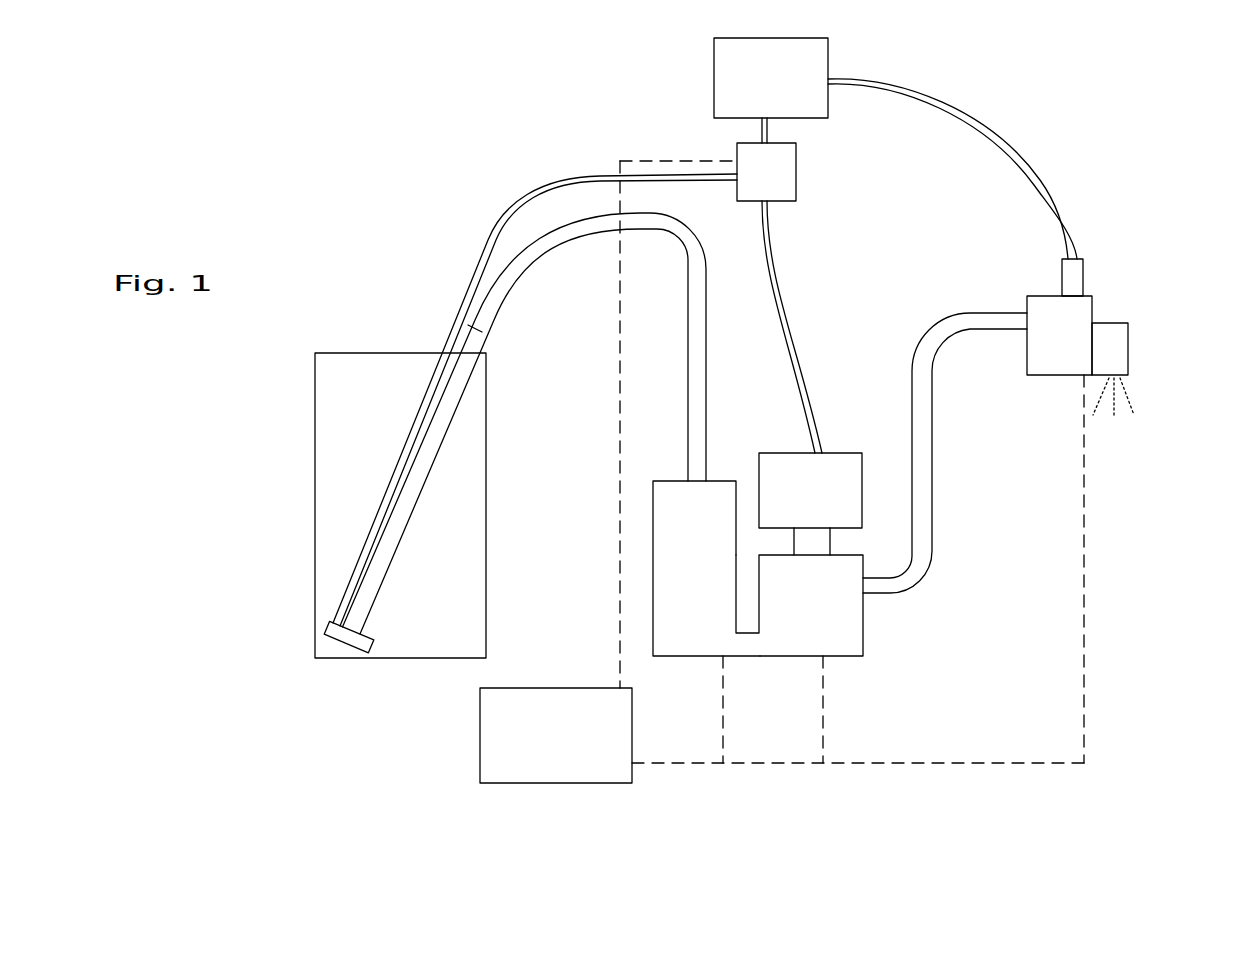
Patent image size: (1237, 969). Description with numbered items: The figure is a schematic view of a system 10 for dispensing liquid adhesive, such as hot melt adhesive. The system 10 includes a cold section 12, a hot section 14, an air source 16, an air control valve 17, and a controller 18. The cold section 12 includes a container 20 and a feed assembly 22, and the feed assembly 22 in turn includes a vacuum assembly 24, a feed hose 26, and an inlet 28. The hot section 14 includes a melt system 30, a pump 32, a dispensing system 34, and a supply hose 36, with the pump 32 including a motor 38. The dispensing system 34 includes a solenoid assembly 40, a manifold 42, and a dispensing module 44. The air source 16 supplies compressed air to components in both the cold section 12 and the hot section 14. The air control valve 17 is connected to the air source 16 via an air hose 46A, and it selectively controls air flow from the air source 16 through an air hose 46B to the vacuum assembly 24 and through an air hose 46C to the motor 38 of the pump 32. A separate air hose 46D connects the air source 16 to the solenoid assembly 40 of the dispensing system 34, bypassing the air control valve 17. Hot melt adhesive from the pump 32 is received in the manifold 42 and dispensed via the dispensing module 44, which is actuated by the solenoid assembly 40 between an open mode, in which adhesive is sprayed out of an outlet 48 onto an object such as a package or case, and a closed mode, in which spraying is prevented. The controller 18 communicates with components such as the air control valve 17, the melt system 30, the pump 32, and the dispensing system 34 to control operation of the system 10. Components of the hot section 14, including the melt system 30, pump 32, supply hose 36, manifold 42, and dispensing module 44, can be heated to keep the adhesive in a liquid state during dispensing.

The system 10 is at (358, 147).
The cold section 12 is at (377, 302).
The hot section 14 is at (845, 320).
The air source 16 is at (714, 81).
The air control valve 17 is at (737, 152).
The controller 18 is at (583, 688).
The container 20 is at (315, 508).
The feed assembly 22 is at (508, 260).
The vacuum assembly 24 is at (378, 647).
The feed hose 26 is at (587, 238).
The inlet 28 is at (337, 653).
The melt system 30 is at (682, 657).
The pump 32 is at (840, 662).
The dispensing system 34 is at (1045, 296).
The supply hose 36 is at (932, 462).
The motor 38 is at (797, 453).
The solenoid assembly 40 is at (1083, 276).
The manifold 42 is at (1040, 377).
The dispensing module 44 is at (1130, 346).
The air hose 46A is at (770, 128).
The air hose 46B is at (585, 176).
The air hose 46C is at (778, 277).
The air hose 46D is at (933, 97).
The outlet 48 is at (1123, 377).